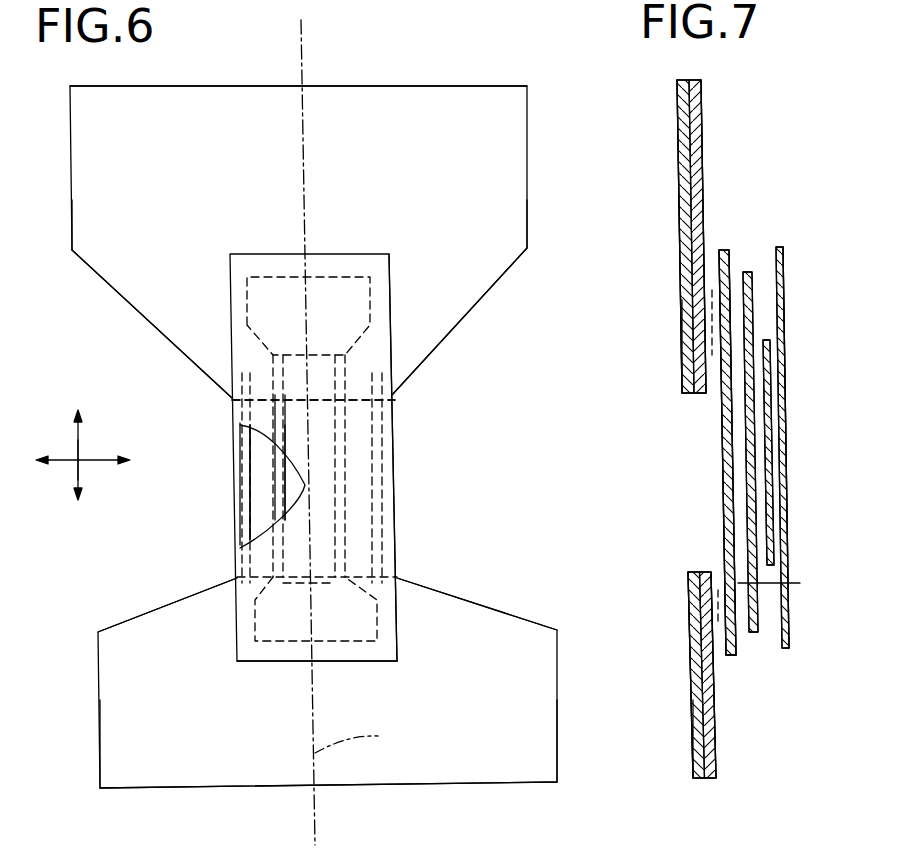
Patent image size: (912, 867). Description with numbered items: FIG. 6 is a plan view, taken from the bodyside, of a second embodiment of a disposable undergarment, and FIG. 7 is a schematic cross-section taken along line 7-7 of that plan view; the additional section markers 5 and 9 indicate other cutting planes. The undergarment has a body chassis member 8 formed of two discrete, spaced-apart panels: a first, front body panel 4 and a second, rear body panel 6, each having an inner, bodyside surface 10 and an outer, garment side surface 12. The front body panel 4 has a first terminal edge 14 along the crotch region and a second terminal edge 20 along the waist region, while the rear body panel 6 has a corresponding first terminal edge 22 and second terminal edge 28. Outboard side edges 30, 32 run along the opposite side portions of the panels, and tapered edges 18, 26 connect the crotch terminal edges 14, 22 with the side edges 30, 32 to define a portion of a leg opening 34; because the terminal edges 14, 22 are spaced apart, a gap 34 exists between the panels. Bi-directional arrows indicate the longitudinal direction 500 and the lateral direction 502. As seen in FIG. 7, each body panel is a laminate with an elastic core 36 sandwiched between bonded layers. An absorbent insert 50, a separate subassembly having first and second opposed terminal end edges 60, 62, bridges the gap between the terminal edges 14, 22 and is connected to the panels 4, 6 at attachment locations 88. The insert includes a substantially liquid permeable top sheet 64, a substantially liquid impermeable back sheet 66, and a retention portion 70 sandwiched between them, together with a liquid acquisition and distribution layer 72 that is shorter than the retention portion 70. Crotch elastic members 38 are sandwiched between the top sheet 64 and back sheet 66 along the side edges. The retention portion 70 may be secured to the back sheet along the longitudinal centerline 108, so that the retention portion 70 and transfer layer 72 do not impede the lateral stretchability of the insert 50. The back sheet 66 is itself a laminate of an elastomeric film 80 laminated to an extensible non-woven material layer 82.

In FIG. 6, the front body panel 4 is at (480, 762).
In FIG. 7, the front body panel 4 is at (718, 760).
In FIG. 6, the section line 5- 5 is at (36, 145).
In FIG. 6, the rear body panel 6 is at (492, 278).
In FIG. 7, the rear body panel 6 is at (706, 138).
In FIG. 6, the line 7- 7 is at (300, 30).
In FIG. 6, the body chassis member 8 is at (232, 497).
In FIG. 6, the section line 9- 9 is at (88, 650).
In FIG. 6, the bodyside surface 10 is at (462, 312).
In FIG. 7, the bodyside surface 10 is at (707, 180).
In FIG. 7, the garment side surface 12 is at (683, 176).
In FIG. 6, the first terminal edge 14 is at (372, 573).
In FIG. 6, the tapered edge 18 is at (163, 604).
In FIG. 6, the second terminal edge 20 is at (396, 785).
In FIG. 6, the first terminal edge 22 is at (395, 402).
In FIG. 6, the tapered edge 26 is at (137, 310).
In FIG. 7, the tapered edge 26 is at (708, 485).
In FIG. 6, the second terminal edge 28 is at (397, 86).
In FIG. 6, the outboard side edge 30 is at (98, 705).
In FIG. 6, the outboard side edge 32 is at (72, 218).
In FIG. 6, the leg opening 34 is at (462, 437).
In FIG. 7, the elastic core 36 is at (683, 240).
In FIG. 6, the crotch elastic members 38 is at (270, 445).
In FIG. 6, the absorbent insert 50 is at (397, 530).
In FIG. 7, the absorbent insert 50 is at (784, 297).
In FIG. 6, the first terminal end edge 60 is at (262, 661).
In FIG. 7, the first terminal end edge 60 is at (728, 660).
In FIG. 6, the second terminal end edge 62 is at (333, 254).
In FIG. 7, the second terminal end edge 62 is at (713, 232).
In FIG. 7, the top sheet 64 is at (784, 395).
In FIG. 7, the back sheet 66 is at (720, 427).
In FIG. 6, the retention portion 70 is at (285, 478).
In FIG. 7, the retention portion 70 is at (755, 537).
In FIG. 6, the liquid acquisition and distribution layer 72 is at (290, 485).
In FIG. 7, the liquid acquisition and distribution layer 72 is at (772, 453).
In FIG. 7, the elastomeric film 80 is at (784, 585).
In FIG. 7, the extensible non-woven material layer 82 is at (725, 538).
In FIG. 7, the attachment locations 88 is at (712, 300).
In FIG. 6, the longitudinal centerline 108 is at (358, 753).
In FIG. 6, the longitudinal direction 500 is at (82, 446).
In FIG. 6, the lateral direction 502 is at (92, 462).